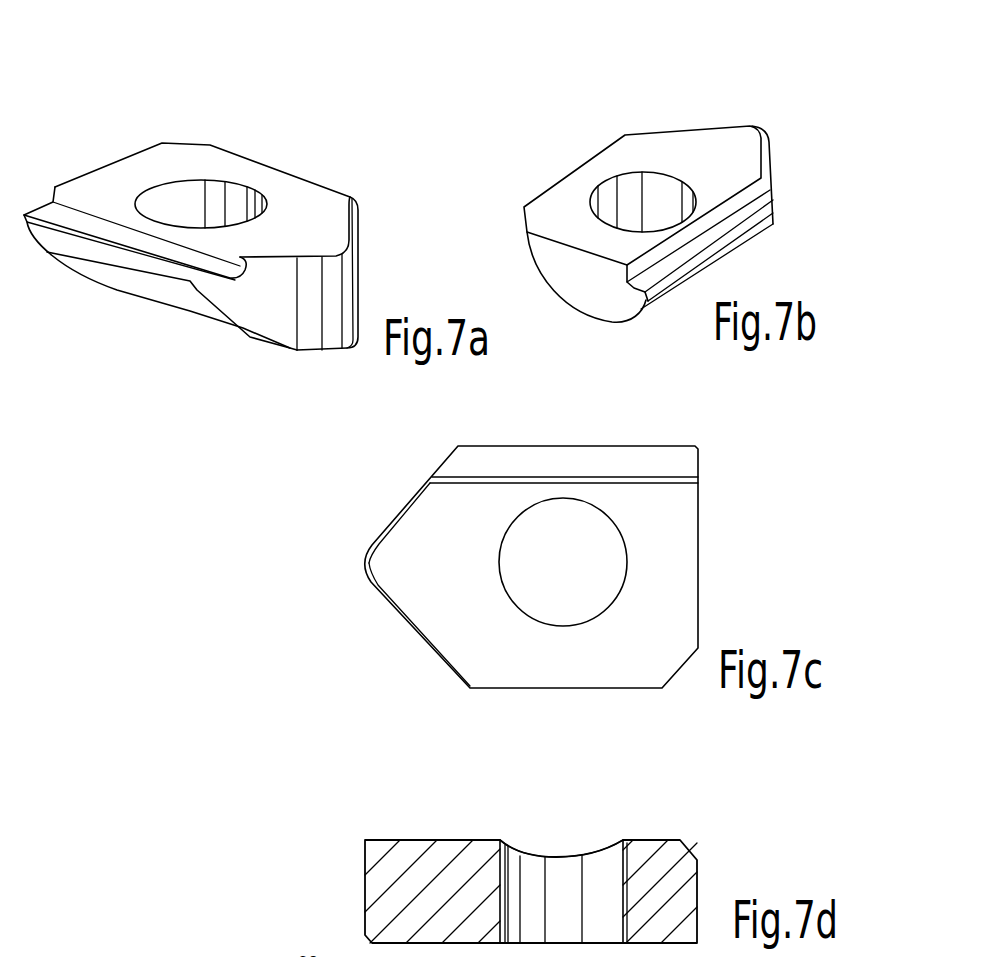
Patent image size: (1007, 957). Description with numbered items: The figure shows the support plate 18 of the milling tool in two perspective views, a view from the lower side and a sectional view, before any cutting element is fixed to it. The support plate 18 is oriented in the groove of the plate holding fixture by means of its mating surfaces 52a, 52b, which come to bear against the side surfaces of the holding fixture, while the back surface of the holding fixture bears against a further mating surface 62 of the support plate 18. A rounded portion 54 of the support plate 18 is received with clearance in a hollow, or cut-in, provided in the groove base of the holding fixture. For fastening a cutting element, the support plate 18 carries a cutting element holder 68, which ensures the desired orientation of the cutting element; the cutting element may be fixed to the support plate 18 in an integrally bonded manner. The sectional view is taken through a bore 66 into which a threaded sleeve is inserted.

In FIG. 7A, the support plate 18 is at (228, 224).
In FIG. 7D, the support plate 18 is at (461, 845).
In FIG. 7A, the mating surface 62 is at (290, 205).
In FIG. 7B, the mating surface 62 is at (695, 138).
In FIG. 7C, the mating surface 62 is at (510, 565).
In FIG. 7A, the cutting element holder 68 is at (160, 262).
In FIG. 7C, the cutting element holder 68 is at (575, 463).
In FIG. 7A, the rounded portion 54 is at (313, 322).
In FIG. 7C, the mating surface 52a is at (401, 512).
In FIG. 7C, the mating surface 52b is at (447, 665).
In FIG. 7C, the bore 66 is at (587, 570).
In FIG. 7D, the bore 66 is at (603, 888).